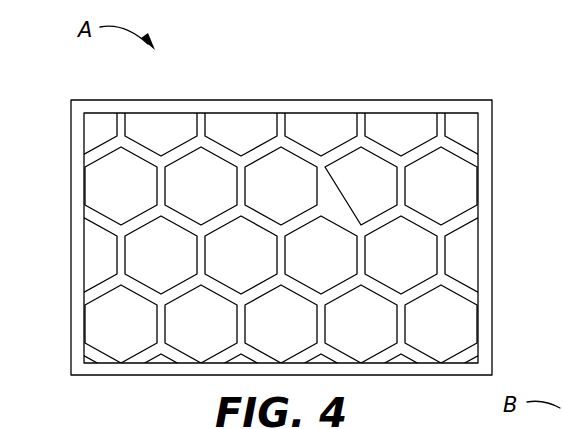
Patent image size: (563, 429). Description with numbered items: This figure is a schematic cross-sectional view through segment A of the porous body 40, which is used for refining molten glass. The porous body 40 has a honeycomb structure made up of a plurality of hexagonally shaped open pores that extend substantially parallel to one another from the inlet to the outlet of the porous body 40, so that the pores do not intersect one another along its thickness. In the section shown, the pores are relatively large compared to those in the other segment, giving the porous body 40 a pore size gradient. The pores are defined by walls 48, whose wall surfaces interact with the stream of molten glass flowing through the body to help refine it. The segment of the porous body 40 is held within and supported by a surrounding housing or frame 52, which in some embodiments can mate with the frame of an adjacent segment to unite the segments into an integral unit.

The porous body 40 is at (286, 246).
The walls 48 is at (286, 246).
The frame 52 is at (315, 100).